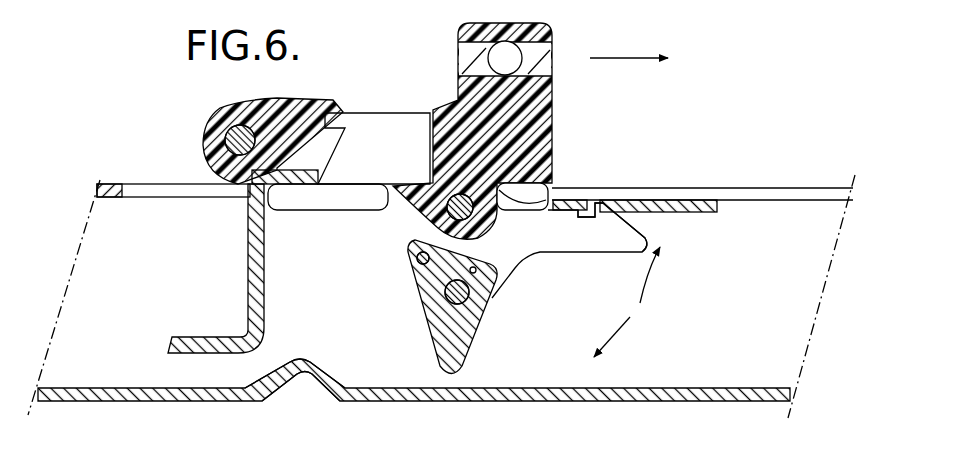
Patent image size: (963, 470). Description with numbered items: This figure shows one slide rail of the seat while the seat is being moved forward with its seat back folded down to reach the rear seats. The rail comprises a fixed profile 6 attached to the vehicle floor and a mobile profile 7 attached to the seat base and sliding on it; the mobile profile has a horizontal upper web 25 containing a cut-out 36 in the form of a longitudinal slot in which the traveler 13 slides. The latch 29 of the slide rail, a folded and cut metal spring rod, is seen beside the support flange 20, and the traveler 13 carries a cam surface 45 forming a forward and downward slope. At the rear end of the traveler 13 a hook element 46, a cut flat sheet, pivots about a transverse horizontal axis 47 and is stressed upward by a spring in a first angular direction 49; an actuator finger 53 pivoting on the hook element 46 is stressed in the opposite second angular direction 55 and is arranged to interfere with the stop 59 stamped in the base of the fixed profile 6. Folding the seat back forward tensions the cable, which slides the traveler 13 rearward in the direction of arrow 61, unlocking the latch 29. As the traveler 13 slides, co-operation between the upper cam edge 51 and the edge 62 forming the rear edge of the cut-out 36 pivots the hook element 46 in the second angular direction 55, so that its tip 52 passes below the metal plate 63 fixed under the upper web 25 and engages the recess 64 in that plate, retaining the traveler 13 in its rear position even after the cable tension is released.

The fixed profile 6 is at (693, 402).
The mobile profile 7 is at (114, 182).
The traveler 13 is at (520, 107).
The support flange 20 is at (318, 171).
The upper web 25 is at (112, 198).
The latch 29 is at (192, 338).
The cut-out 36 is at (207, 188).
The cam surface 45 is at (342, 124).
The hook element 46 is at (558, 243).
The transverse horizontal axis 47 is at (438, 212).
The first angular direction 49 is at (655, 280).
The upper cam edge 51 is at (632, 231).
The tip 52 is at (602, 203).
The actuator finger 53 is at (463, 324).
The second angular direction 55 is at (618, 335).
The stop 59 is at (291, 373).
The arrow 61 is at (628, 58).
The edge 62 is at (566, 200).
The metal plate 63 is at (683, 200).
The recess 64 is at (623, 200).